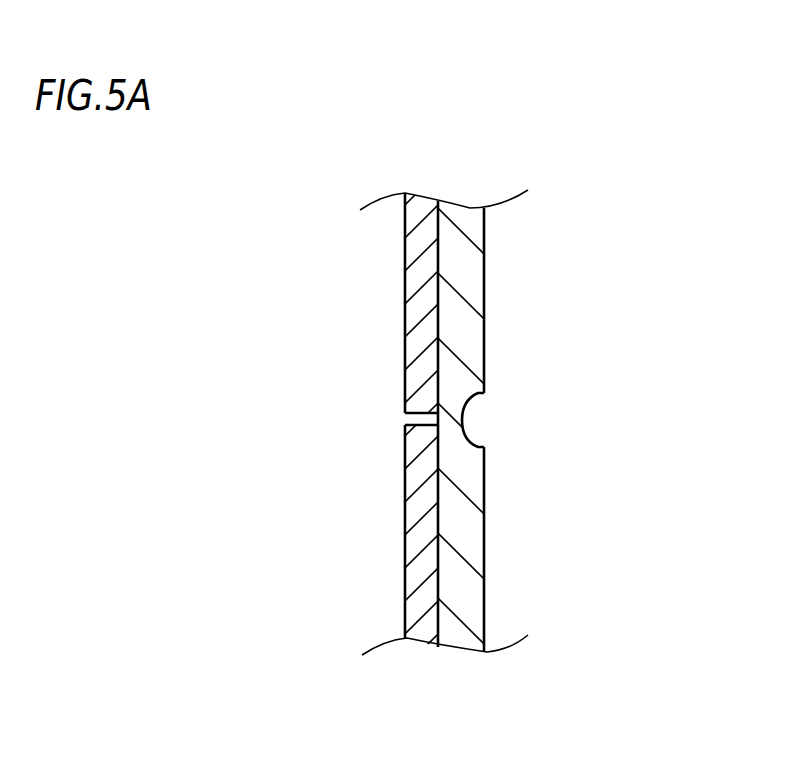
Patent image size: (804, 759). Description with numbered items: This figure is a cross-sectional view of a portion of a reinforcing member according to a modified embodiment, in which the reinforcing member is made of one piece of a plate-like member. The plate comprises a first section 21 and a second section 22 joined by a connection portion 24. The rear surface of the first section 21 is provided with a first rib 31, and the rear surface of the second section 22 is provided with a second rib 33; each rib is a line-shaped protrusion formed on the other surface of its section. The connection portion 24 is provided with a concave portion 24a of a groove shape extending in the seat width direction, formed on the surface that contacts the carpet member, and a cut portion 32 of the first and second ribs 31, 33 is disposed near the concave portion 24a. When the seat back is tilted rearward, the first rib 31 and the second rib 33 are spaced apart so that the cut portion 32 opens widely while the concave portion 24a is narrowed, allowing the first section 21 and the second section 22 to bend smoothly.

The first section 21 is at (457, 305).
The second section 22 is at (465, 535).
The connection portion 24 is at (450, 420).
The concave portion 24a is at (470, 434).
The first rib 31 is at (420, 293).
The cut portion 32 is at (398, 420).
The second rib 33 is at (420, 537).